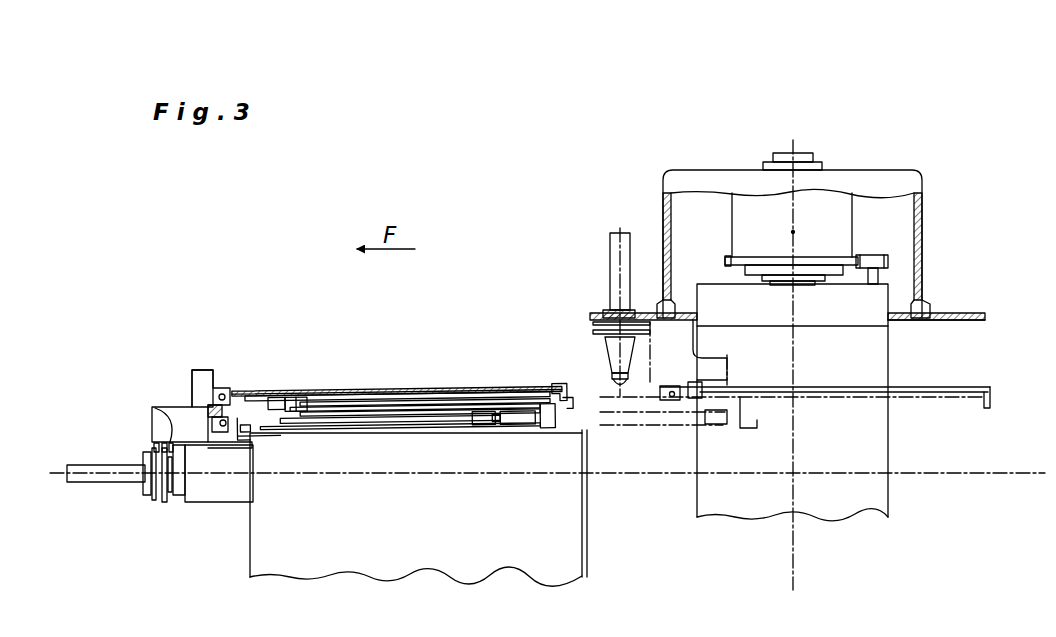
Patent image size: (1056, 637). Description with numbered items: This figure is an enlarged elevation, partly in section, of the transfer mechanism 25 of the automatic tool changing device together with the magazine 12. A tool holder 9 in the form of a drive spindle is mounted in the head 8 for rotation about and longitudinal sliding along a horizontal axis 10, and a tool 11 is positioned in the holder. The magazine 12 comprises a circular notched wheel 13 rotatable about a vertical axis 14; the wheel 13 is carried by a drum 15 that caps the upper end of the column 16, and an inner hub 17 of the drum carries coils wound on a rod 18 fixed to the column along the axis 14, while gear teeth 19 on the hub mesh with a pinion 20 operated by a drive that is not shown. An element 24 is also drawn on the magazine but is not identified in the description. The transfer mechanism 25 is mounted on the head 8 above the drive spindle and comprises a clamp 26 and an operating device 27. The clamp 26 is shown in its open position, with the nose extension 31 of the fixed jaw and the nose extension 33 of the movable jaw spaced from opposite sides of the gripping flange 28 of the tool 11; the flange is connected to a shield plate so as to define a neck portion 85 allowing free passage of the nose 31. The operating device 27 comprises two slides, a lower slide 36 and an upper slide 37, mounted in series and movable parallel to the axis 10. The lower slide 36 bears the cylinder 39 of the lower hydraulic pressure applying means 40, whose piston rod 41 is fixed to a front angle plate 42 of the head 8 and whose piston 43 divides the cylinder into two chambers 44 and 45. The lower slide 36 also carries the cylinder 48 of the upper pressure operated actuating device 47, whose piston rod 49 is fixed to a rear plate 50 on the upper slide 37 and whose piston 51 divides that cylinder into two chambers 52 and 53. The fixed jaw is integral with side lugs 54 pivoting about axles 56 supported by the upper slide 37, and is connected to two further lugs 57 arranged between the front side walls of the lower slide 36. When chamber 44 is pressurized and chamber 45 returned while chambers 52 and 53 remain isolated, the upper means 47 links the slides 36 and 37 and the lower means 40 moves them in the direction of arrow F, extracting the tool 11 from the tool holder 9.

The head 8 is at (585, 546).
The tool holder 9 is at (205, 496).
The horizontal axis 10 is at (385, 474).
The tool 11 is at (90, 483).
The magazine 12 is at (813, 347).
The wheel 13 is at (950, 313).
The vertical axis 14 is at (795, 563).
The drum 15 is at (858, 178).
The column 16 is at (890, 488).
The inner hub 17 is at (792, 225).
The rod 18 is at (792, 160).
The gear teeth 19 is at (727, 259).
The pinion 20 is at (890, 262).
The plate underside 24 is at (958, 320).
The transfer mechanism 25 is at (413, 404).
The clamp 26 is at (178, 412).
The operating device 27 is at (488, 392).
The gripping flange 28 is at (160, 501).
The nose extension 31 is at (155, 445).
The nose extension 33 is at (166, 440).
The lower slide 36 is at (548, 431).
The upper slide 37 is at (330, 396).
The cylinder 39 is at (505, 428).
The hydraulic pressure applying means 40 is at (360, 432).
The piston rod 41 is at (262, 443).
The front angle plate 42 is at (229, 389).
The piston 43 is at (478, 428).
The chamber 44 is at (320, 430).
The chamber 45 is at (525, 428).
The pressure operated actuating device 47 is at (403, 392).
The cylinder 48 is at (520, 390).
The piston rod 49 is at (458, 413).
The rear plate 50 is at (576, 406).
The piston 51 is at (297, 391).
The chamber 52 is at (276, 398).
The chamber 53 is at (422, 408).
The side lugs 54 is at (218, 390).
The axles 56 is at (225, 387).
The lugs 57 is at (212, 410).
The neck portion 85 is at (152, 497).